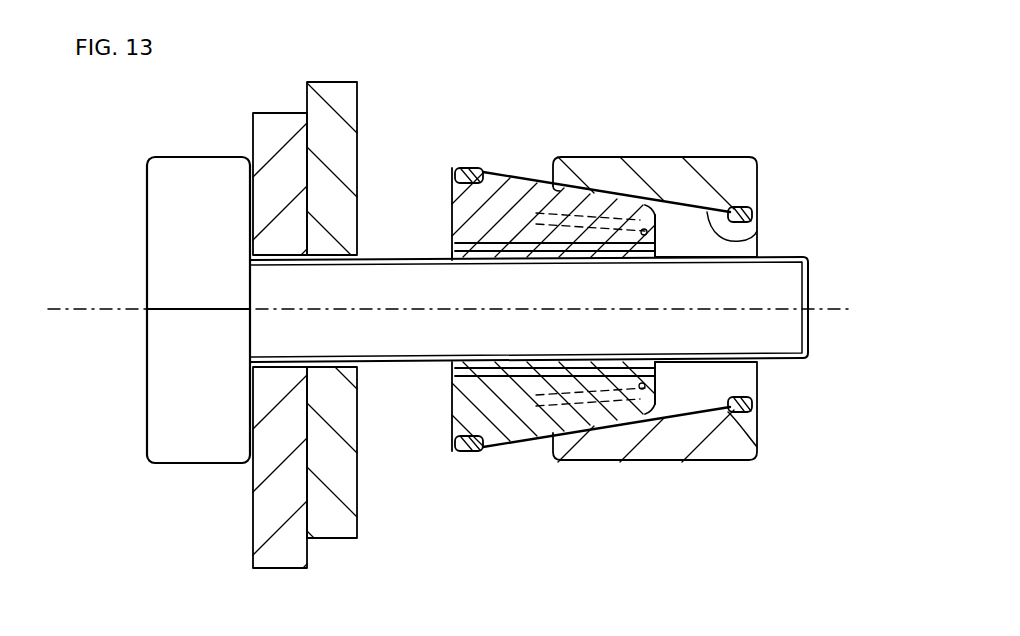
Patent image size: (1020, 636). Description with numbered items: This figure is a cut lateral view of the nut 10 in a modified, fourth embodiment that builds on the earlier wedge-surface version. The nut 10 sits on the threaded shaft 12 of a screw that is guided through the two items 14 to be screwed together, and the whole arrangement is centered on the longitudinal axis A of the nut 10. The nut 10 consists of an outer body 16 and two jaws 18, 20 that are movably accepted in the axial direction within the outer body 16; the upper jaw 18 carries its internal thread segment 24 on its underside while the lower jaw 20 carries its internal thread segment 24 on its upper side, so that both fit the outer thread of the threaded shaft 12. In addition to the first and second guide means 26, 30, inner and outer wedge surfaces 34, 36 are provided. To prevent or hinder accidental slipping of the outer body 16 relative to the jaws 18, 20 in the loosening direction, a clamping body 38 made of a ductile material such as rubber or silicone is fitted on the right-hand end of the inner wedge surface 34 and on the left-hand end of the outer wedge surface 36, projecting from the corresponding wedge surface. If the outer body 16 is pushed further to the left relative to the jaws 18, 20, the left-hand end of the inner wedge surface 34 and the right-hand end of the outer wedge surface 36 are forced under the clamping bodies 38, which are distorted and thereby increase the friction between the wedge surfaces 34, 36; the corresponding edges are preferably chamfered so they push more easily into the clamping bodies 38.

The nut 10 is at (605, 303).
The threaded shaft 12 is at (792, 362).
The items to be screwed together 14 is at (317, 82).
The outer body 16 is at (695, 269).
The upper jaw 18 is at (452, 210).
The lower jaw 20 is at (452, 400).
The internal thread segment 24 is at (452, 258).
The first guide means 26 is at (590, 168).
The second guide means 30 is at (540, 213).
The inner wedge surface 34 is at (757, 232).
The outer wedge surface 36 is at (508, 178).
The clamping body 38 is at (468, 168).
The longitudinal axis A is at (93, 309).